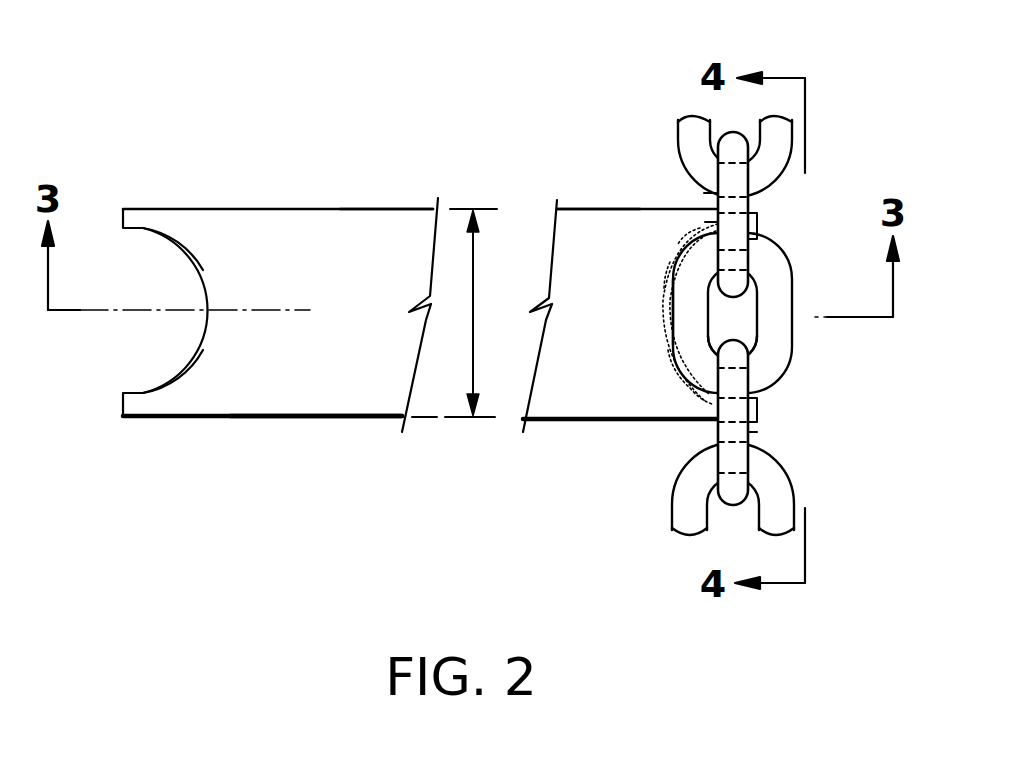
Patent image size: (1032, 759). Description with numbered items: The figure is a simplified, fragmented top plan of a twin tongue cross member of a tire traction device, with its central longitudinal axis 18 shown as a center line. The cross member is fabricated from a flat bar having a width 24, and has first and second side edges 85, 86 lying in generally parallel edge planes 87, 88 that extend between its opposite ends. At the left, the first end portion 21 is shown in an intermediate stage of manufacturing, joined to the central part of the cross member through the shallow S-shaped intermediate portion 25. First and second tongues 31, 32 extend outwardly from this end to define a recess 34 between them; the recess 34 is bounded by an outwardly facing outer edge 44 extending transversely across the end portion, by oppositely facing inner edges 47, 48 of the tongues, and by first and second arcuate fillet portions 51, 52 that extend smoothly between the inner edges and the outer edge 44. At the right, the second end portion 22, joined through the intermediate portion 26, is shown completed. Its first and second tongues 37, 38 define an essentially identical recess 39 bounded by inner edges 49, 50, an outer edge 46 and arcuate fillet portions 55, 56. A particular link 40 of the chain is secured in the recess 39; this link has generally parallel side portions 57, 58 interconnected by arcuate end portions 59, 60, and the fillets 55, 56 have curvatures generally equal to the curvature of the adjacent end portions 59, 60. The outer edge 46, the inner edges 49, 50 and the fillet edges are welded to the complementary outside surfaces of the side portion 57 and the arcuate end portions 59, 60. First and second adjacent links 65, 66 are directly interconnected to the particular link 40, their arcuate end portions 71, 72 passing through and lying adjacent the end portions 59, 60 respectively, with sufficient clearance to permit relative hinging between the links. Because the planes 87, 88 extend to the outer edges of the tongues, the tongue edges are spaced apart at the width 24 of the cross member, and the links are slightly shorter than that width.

The central longitudinal axis 18 is at (270, 310).
The first end portion 21 is at (233, 186).
The second end portion 22 is at (648, 153).
The width 24 is at (475, 316).
The intermediate portion 25 is at (283, 207).
The intermediate portion 26 is at (547, 402).
The first tongue 31 is at (143, 207).
The second tongue 32 is at (141, 419).
The recess 34 is at (126, 332).
The first tongue 37 is at (705, 223).
The second tongue 38 is at (700, 428).
The recess 39 is at (673, 110).
The particular link 40 is at (798, 280).
The outer edge 44 is at (205, 290).
The outer edge 46 is at (690, 336).
The inner edge 47 is at (138, 228).
The inner edge 48 is at (137, 392).
The inner edge 49 is at (760, 256).
The inner edge 50 is at (723, 410).
The first arcuate fillet portion 51 is at (180, 244).
The second arcuate fillet portion 52 is at (185, 377).
The first arcuate fillet portion 55 is at (688, 270).
The second arcuate fillet portion 56 is at (705, 385).
The side portion 57 is at (690, 314).
The side portion 58 is at (773, 340).
The arcuate end portion 59 is at (712, 262).
The arcuate end portion 60 is at (710, 412).
The first adjacent link 65 is at (718, 197).
The second adjacent link 66 is at (750, 432).
The arcuate end portion 71 is at (730, 288).
The arcuate end portion 72 is at (700, 360).
The first side edge 85 is at (353, 207).
The second side edge 86 is at (325, 420).
The edge plane 87 is at (540, 209).
The edge plane 88 is at (424, 419).